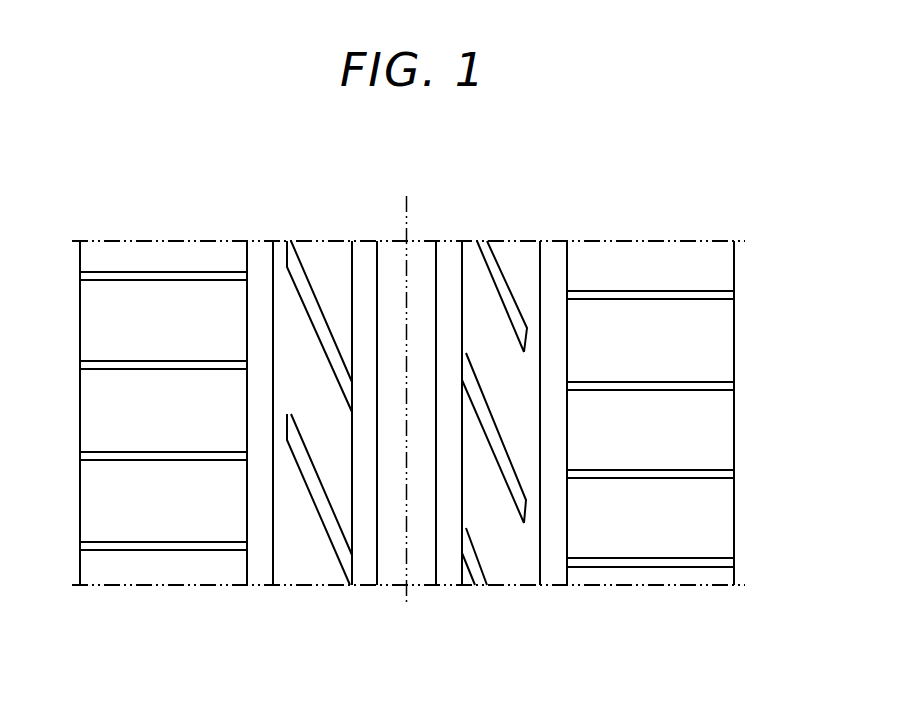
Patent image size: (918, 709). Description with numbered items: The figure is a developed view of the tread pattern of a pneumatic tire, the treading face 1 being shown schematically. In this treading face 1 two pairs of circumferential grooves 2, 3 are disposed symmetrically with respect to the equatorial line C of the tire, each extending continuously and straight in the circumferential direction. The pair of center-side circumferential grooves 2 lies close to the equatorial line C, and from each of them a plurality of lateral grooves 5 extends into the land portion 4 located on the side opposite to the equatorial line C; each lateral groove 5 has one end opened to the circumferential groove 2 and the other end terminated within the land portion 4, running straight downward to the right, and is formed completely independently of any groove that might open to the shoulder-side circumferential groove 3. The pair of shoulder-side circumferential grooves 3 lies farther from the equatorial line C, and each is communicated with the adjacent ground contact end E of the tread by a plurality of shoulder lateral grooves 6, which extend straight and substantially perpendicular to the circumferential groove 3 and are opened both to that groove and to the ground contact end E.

The treading face 1 is at (412, 597).
The center-side circumferential grooves 2 is at (362, 250).
The shoulder-side circumferential grooves 3 is at (262, 250).
The land portion 4 is at (307, 568).
The lateral grooves 5 is at (318, 313).
The shoulder lateral grooves 6 is at (172, 368).
The equatorial line C is at (407, 386).
The ground contact end E is at (80, 382).